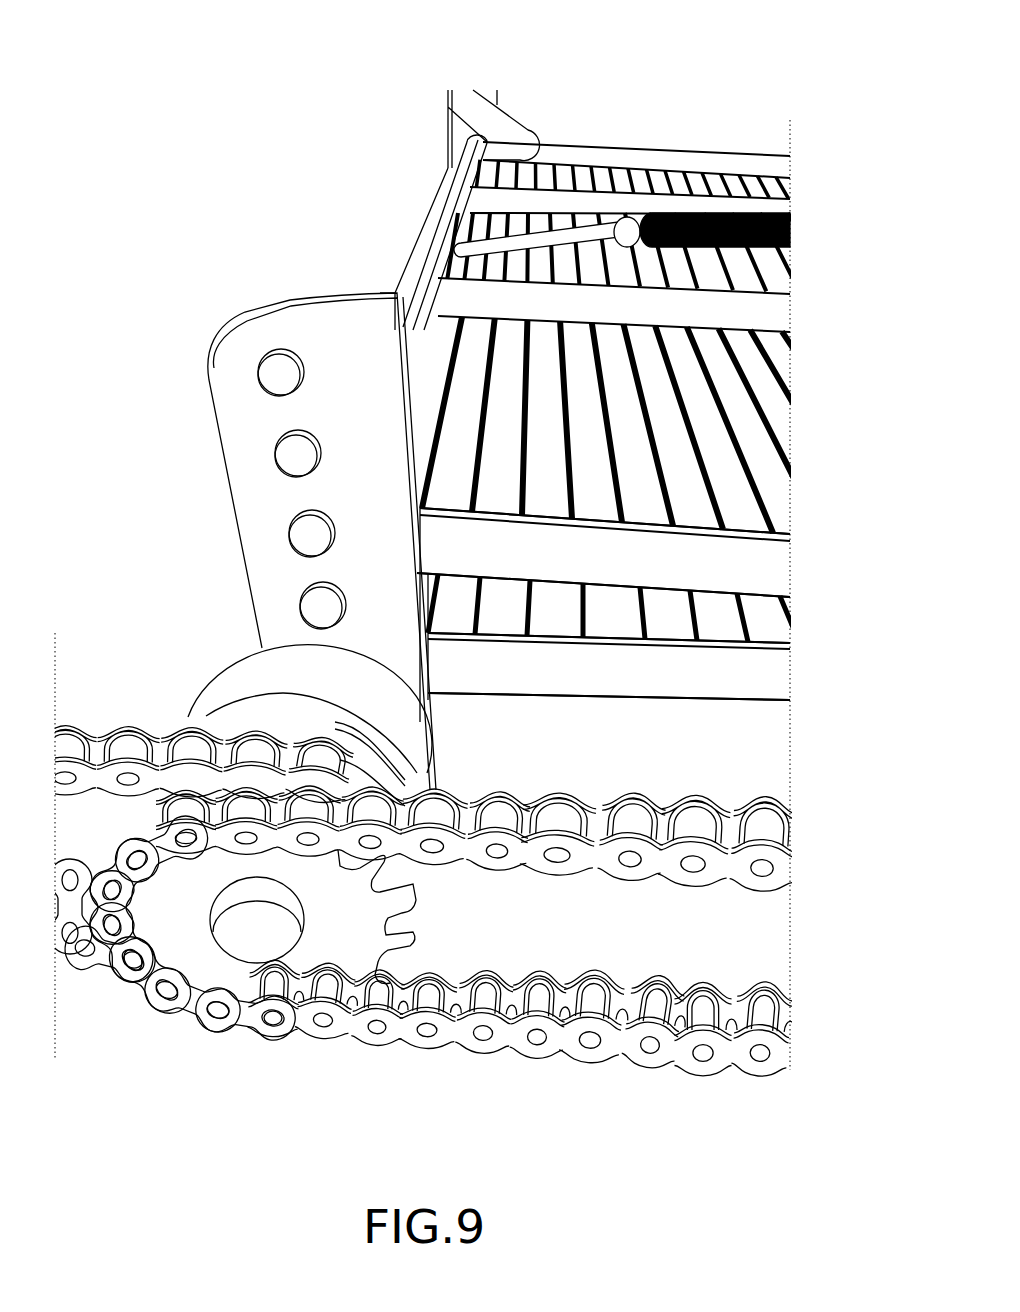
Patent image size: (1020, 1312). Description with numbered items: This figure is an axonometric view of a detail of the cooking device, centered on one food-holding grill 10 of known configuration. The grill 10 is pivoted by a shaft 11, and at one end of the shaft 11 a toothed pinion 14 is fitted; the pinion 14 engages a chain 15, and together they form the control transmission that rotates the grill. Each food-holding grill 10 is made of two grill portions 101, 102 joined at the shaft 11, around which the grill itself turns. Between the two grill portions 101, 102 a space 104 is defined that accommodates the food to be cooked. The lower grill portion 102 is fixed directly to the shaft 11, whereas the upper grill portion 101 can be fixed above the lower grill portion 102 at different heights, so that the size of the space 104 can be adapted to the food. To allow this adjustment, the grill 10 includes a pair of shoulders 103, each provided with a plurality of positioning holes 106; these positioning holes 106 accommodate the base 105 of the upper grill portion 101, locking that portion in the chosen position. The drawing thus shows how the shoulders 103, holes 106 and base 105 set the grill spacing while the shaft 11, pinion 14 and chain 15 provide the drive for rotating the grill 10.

The food-holding grill 10 is at (670, 399).
The upper grill portion 101 is at (763, 565).
The lower grill portion 102 is at (763, 668).
The shoulder 103 is at (455, 130).
The space 104 is at (619, 624).
The base 105 is at (417, 272).
The positioning hole 106 is at (268, 378).
The shaft 11 is at (250, 945).
The toothed pinion 14 is at (336, 952).
The chain 15 is at (507, 1035).